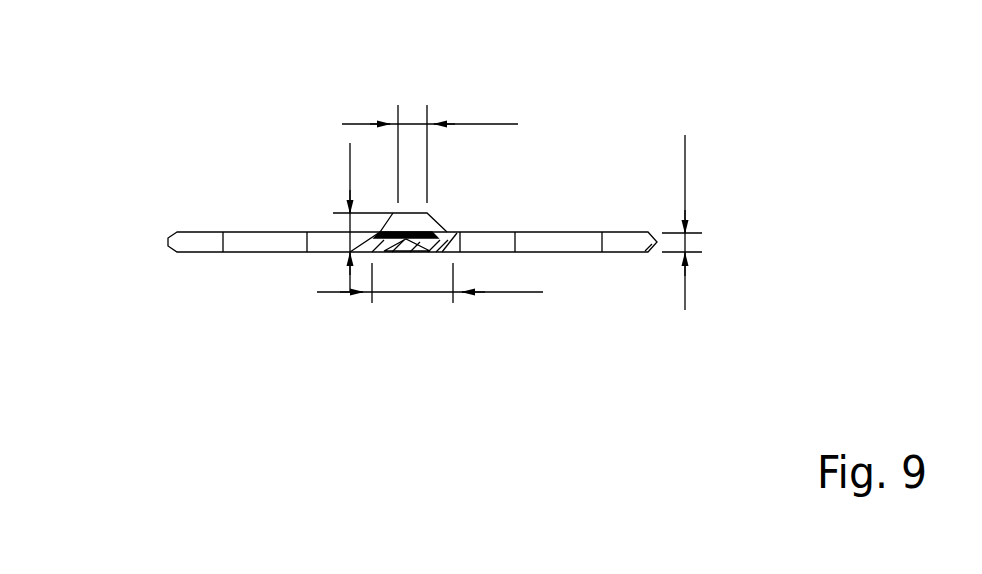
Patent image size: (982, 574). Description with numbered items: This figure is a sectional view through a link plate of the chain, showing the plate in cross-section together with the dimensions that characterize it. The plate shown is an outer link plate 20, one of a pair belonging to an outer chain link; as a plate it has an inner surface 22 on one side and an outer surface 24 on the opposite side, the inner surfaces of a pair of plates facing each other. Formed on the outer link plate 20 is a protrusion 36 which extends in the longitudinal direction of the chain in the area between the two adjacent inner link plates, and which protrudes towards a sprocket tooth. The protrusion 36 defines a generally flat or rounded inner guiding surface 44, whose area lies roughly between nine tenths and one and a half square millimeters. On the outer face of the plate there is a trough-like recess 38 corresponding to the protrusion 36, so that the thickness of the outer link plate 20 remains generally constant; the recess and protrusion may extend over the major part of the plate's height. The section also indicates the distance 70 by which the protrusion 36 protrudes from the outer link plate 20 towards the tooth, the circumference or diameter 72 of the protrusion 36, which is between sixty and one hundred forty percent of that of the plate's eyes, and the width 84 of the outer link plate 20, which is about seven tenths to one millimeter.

The outer link plate 20 is at (275, 198).
The inner surface 22 is at (212, 231).
The outer surface 24 is at (212, 254).
The protrusion 36 is at (440, 217).
The trough-like recess 38 is at (410, 253).
The inner guiding surface 44 is at (408, 212).
The distance 70 is at (348, 157).
The circumference and/or diameter 72 is at (520, 292).
The width 84 is at (686, 158).